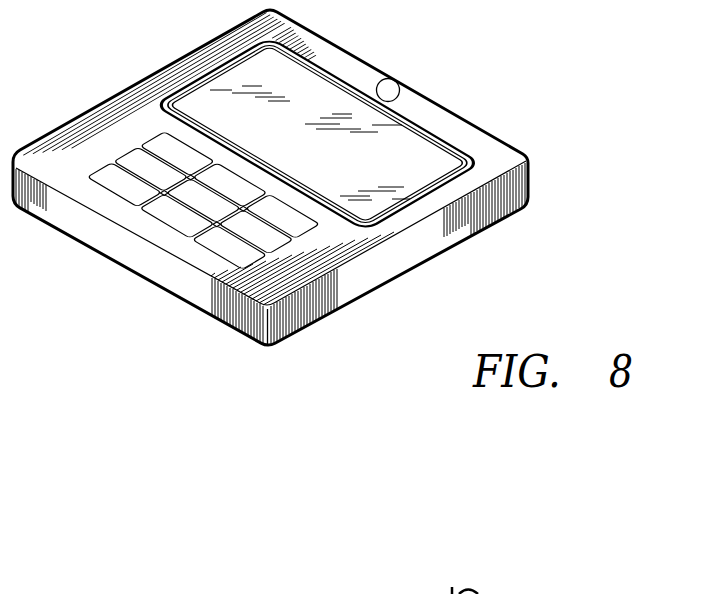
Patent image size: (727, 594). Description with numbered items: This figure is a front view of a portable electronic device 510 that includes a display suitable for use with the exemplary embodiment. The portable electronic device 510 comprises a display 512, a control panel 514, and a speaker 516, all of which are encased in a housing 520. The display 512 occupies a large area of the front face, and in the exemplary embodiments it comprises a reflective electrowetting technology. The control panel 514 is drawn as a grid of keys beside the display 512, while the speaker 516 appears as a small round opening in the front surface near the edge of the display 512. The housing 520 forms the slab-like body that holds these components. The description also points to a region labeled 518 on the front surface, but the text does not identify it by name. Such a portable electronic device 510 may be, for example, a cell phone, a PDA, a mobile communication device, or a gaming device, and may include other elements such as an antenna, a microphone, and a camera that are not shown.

The portable electronic device 510 is at (584, 300).
The display 512 is at (235, 75).
The control panel 514 is at (133, 163).
The speaker 516 is at (398, 84).
The bezel / top surface 518 is at (478, 141).
The housing 520 is at (410, 257).